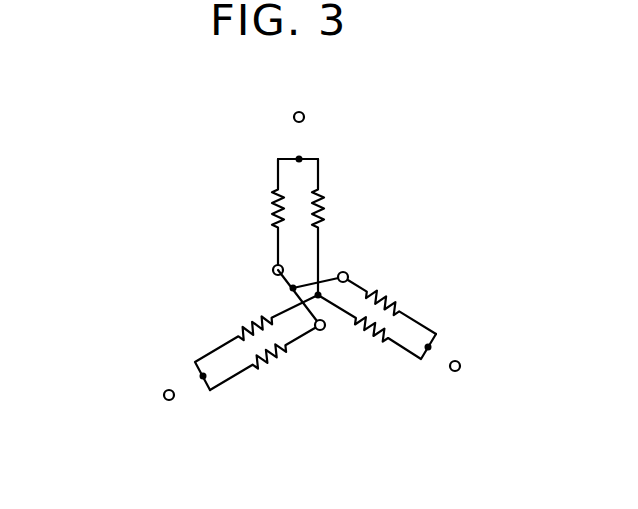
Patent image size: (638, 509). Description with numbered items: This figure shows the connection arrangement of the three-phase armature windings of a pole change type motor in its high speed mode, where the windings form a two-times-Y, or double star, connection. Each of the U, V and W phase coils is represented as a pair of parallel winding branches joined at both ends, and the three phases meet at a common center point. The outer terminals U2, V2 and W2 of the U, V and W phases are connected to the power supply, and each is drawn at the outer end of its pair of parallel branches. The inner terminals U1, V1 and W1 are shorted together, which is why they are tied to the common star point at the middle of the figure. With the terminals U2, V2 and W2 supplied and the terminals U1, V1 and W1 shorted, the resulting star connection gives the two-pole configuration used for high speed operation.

The U phase terminal U2 is at (299, 159).
The U phase terminal U1 is at (264, 217).
The V phase terminal V1 is at (364, 290).
The V phase terminal V2 is at (428, 347).
The W phase terminal W1 is at (277, 330).
The W phase terminal W2 is at (203, 376).